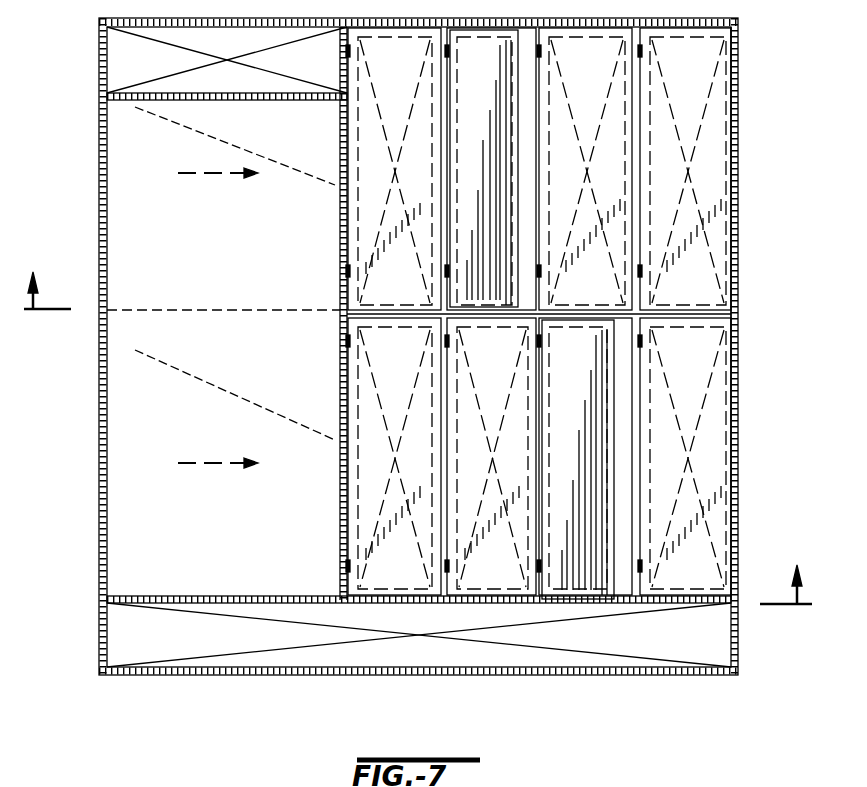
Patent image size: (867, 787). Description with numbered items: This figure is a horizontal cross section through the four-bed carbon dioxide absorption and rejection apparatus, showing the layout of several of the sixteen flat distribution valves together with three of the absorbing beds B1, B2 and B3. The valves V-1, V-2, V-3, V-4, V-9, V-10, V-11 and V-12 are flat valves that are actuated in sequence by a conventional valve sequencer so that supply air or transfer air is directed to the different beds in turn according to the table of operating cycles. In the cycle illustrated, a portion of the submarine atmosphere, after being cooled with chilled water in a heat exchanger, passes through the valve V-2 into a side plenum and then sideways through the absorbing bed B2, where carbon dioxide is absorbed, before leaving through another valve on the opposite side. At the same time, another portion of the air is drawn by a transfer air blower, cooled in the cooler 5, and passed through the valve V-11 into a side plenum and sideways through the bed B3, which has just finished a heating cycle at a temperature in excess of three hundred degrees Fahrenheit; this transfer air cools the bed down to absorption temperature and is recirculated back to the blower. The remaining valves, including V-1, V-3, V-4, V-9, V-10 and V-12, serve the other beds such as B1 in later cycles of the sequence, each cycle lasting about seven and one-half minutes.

The distribution valve V-1 is at (408, 65).
The distribution valve V-2 is at (499, 65).
The distribution valve V-3 is at (601, 65).
The distribution valve V-4 is at (701, 65).
The distribution valve V-9 is at (408, 355).
The distribution valve V-10 is at (504, 355).
The distribution valve V-11 is at (595, 355).
The distribution valve V-12 is at (695, 355).
The absorbing bed B1 is at (223, 445).
The absorbing bed B2 is at (507, 549).
The absorbing bed B3 is at (705, 405).
The cooler 5 is at (418, 438).